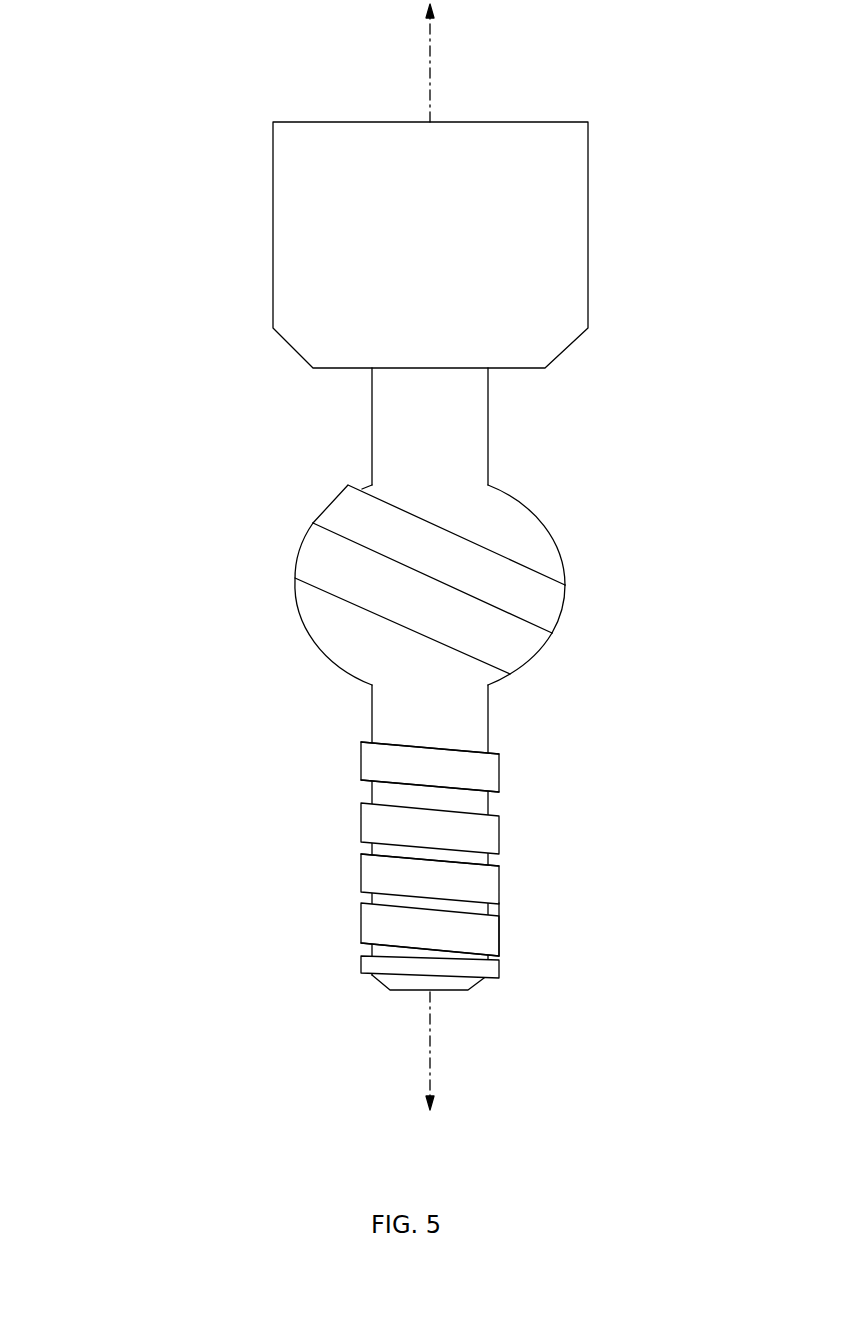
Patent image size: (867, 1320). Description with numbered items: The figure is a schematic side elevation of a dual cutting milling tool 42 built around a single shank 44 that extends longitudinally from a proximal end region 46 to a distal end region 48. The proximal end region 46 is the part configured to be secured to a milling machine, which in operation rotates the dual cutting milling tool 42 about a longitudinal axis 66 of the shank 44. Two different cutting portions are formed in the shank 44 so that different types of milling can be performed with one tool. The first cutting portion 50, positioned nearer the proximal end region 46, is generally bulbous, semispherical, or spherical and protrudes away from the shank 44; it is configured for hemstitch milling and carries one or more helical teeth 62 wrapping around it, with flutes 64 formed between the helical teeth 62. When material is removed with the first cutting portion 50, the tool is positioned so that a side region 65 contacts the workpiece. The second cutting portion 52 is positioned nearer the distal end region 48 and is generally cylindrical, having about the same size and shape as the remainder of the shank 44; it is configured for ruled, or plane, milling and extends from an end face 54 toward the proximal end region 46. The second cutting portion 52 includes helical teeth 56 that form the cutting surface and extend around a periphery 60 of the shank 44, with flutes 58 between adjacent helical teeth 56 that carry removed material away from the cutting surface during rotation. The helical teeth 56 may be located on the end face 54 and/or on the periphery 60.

The dual cutting milling tool 42 is at (372, 556).
The shank 44 is at (408, 671).
The proximal end region 46 is at (565, 396).
The distal end region 48 is at (419, 893).
The first cutting portion 50 is at (547, 605).
The second cutting portion 52 is at (361, 843).
The end face 54 is at (447, 985).
The helical teeth 56 is at (495, 775).
The flutes 58 is at (363, 795).
The periphery 60 is at (488, 910).
The helical teeth 62 is at (450, 532).
The flutes 64 is at (323, 570).
The side region 65 is at (533, 549).
The longitudinal axis 66 is at (430, 68).